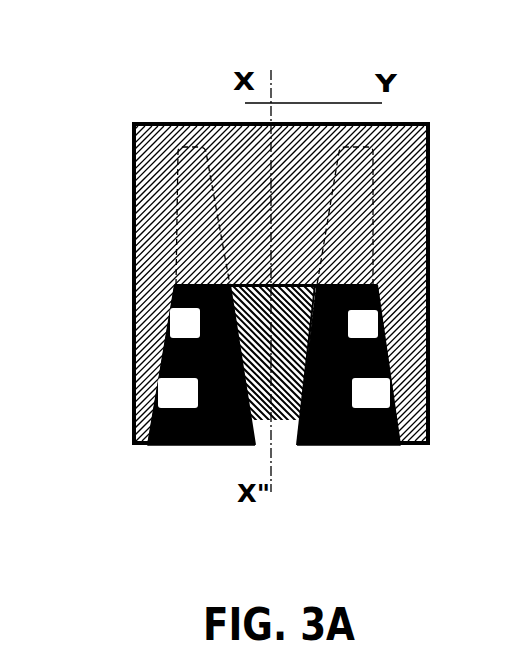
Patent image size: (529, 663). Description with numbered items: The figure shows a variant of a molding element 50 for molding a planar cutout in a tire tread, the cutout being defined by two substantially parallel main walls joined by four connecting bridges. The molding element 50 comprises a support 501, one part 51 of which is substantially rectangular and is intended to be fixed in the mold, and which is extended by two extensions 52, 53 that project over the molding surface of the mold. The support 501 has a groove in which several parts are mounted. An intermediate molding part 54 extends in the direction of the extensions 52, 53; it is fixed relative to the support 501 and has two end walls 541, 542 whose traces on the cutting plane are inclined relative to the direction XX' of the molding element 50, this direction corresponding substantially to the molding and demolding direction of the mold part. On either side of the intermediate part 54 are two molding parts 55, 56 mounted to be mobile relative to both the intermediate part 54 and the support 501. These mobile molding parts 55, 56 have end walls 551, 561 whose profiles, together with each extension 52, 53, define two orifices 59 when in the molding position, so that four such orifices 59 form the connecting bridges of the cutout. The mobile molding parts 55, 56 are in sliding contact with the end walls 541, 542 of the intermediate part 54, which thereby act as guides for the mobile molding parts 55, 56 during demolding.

The molding element 50 is at (450, 172).
The support 501 is at (132, 202).
The part of the support 51 is at (390, 228).
The extension 52 is at (407, 397).
The extension 53 is at (131, 395).
The intermediate molding part 54 is at (287, 445).
The end wall of the intermediate part 541 is at (150, 443).
The end wall of the intermediate part 542 is at (318, 445).
The mobile molding part 55 is at (197, 445).
The end wall of mobile molding part 551 is at (216, 447).
The mobile molding part 56 is at (352, 445).
The end wall of mobile molding part 561 is at (382, 445).
The orifices 59 is at (170, 396).